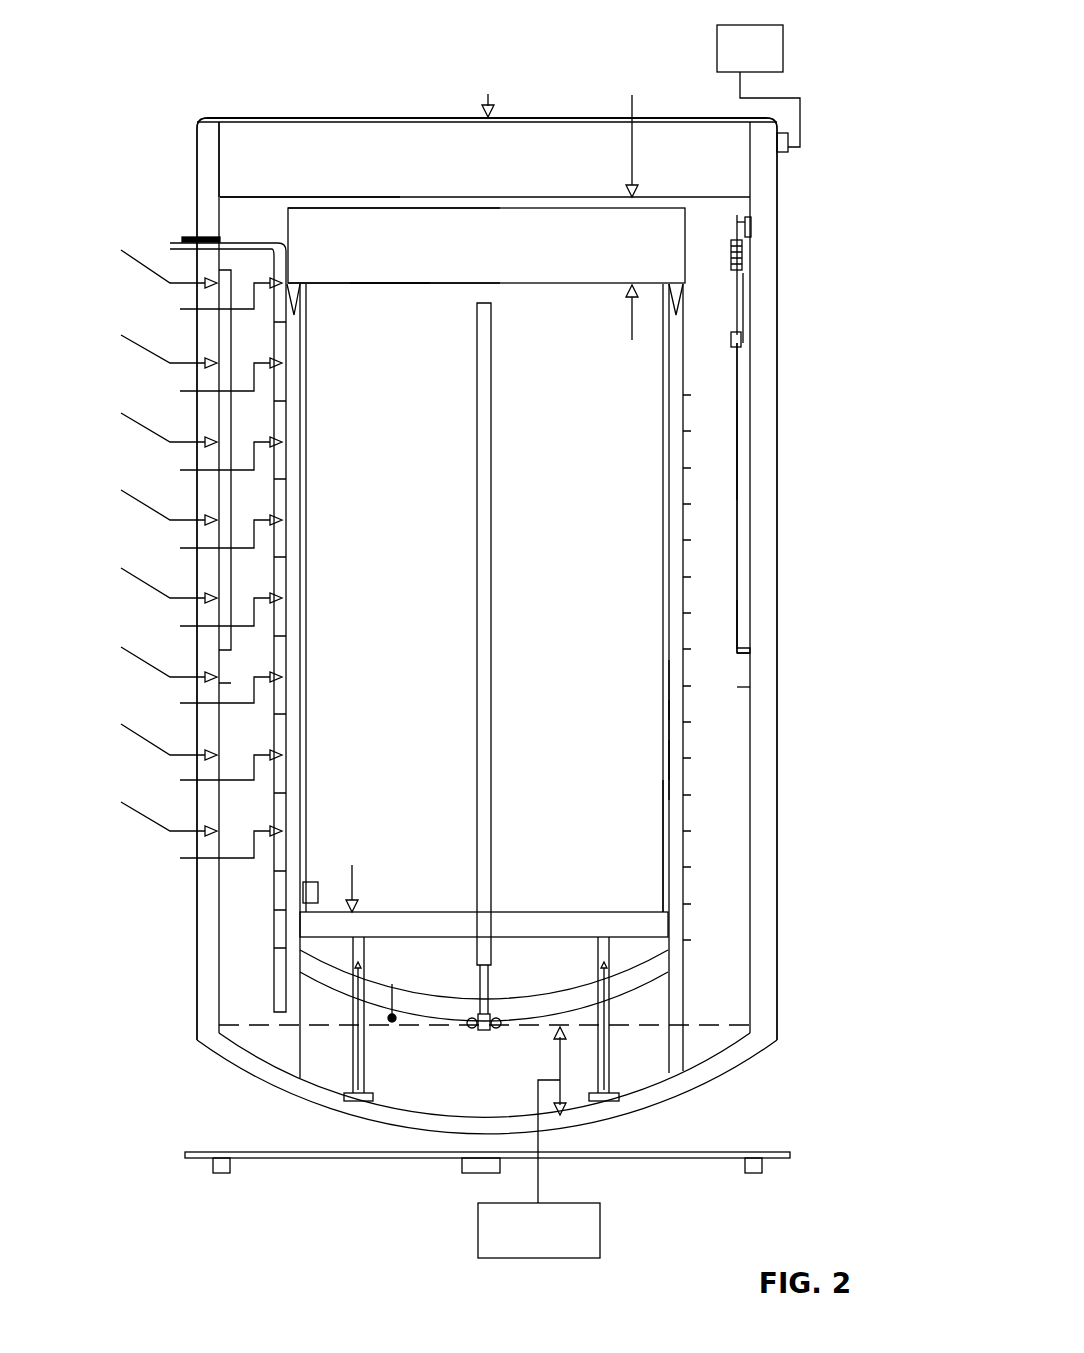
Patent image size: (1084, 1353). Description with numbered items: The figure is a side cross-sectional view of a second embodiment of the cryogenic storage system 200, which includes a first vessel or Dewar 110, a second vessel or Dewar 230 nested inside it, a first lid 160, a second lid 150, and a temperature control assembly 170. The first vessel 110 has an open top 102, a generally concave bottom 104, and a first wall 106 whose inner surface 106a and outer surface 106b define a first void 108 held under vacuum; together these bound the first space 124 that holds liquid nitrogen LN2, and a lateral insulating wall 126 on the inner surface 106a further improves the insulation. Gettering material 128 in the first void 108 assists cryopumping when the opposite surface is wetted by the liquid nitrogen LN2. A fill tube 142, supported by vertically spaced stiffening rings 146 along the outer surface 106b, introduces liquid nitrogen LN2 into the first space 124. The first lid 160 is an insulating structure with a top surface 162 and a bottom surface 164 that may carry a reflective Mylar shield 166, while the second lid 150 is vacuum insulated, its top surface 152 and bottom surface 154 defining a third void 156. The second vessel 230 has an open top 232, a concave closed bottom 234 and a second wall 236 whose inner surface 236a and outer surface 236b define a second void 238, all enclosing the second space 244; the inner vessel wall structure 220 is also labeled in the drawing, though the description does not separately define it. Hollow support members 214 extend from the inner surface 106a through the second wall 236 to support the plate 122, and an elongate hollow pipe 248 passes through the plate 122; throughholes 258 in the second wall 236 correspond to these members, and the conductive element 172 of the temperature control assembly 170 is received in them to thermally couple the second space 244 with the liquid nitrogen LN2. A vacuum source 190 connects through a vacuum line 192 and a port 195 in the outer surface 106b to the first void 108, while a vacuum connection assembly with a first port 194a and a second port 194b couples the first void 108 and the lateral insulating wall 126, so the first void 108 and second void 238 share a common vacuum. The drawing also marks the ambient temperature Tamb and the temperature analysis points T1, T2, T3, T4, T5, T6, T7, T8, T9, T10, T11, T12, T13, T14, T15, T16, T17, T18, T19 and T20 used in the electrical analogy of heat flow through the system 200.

The cryogenic storage system 200 is at (172, 45).
The first open end or top 102 is at (703, 212).
The first closed end or bottom 104 is at (672, 1098).
The first wall 106 is at (772, 658).
The inner surface 106a is at (753, 502).
The outer surface 106b is at (777, 617).
The first gap or void 108 is at (770, 580).
The first vessel or Dewar 110 is at (815, 522).
The plate 122 is at (653, 930).
The first space or controlled volume 124 is at (720, 468).
The lateral insulating wall 126 is at (745, 312).
The gettering material 128 is at (582, 1108).
The fill tube 142 is at (175, 242).
The stiffening rings or spacers 146 is at (277, 907).
The second lid 150 is at (523, 251).
The top surface 152 is at (360, 208).
The bottom surface 154 is at (357, 282).
The third void 156 is at (386, 284).
The first lid 160 is at (496, 161).
The top surface 162 is at (277, 117).
The bottom surface 164 is at (313, 195).
The reflective Mylar shield 166 is at (273, 197).
The temperature control assembly 170 is at (313, 870).
The conductive element or specific conductor 172 is at (407, 1016).
The vacuum source 190 is at (735, 59).
The vacuum line 192 is at (810, 98).
The first port 194a is at (750, 225).
The second port 194b is at (737, 343).
The port 195 is at (787, 157).
The support members 214 is at (365, 1060).
The inner vessel 220 is at (306, 552).
The second vessel or Dewar 230 is at (700, 413).
The second open end or top 232 is at (660, 300).
The second closed end or bottom 234 is at (667, 950).
The second wall 236 is at (688, 738).
The inner surface 236a is at (700, 697).
The outer surface 236b is at (695, 770).
The second gap or void 238 is at (666, 806).
The second space 244 is at (633, 870).
The elongate hollow pipe 248 is at (492, 560).
The throughholes 258 is at (490, 997).
The liquid nitrogen LN2 is at (748, 1035).
The ambient temperature Tamb is at (488, 69).
The temperature analysis point T1 is at (632, 124).
The temperature analysis point T2 is at (147, 258).
The temperature analysis point T3 is at (632, 334).
The temperature analysis point T4 is at (352, 866).
The temperature analysis point T5 is at (392, 977).
The temperature analysis point T6 is at (209, 304).
The temperature analysis point T7 is at (209, 385).
The temperature analysis point T8 is at (147, 340).
The temperature analysis point T9 is at (209, 464).
The temperature analysis point T10 is at (147, 419).
The temperature analysis point T11 is at (209, 542).
The temperature analysis point T12 is at (147, 496).
The temperature analysis point T13 is at (209, 620).
The temperature analysis point T14 is at (147, 574).
The temperature analysis point T15 is at (209, 698).
The temperature analysis point T16 is at (147, 653).
The temperature analysis point T17 is at (209, 776).
The temperature analysis point T18 is at (147, 731).
The temperature analysis point T19 is at (209, 853).
The temperature analysis point T20 is at (147, 808).